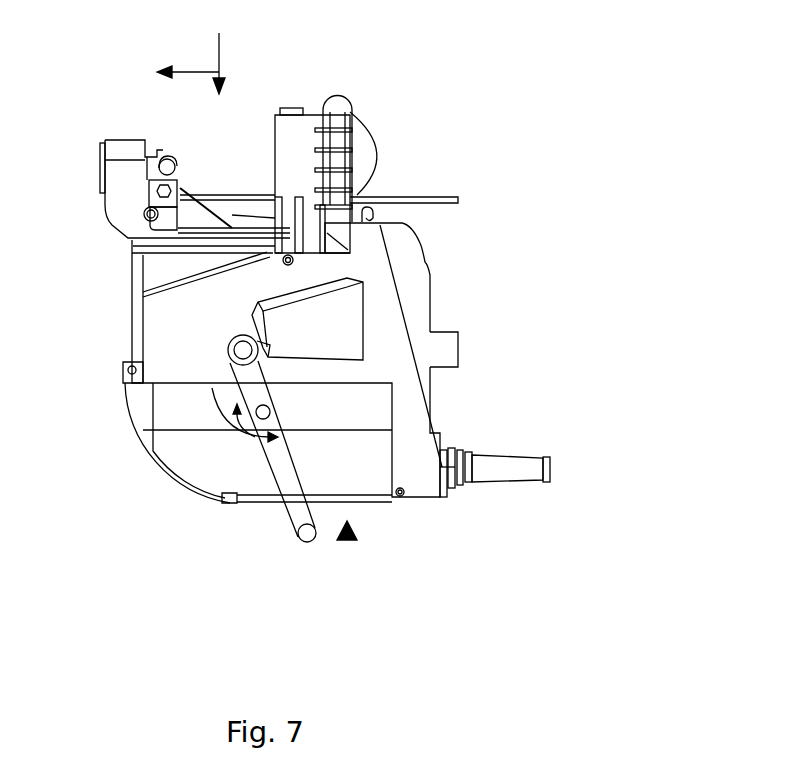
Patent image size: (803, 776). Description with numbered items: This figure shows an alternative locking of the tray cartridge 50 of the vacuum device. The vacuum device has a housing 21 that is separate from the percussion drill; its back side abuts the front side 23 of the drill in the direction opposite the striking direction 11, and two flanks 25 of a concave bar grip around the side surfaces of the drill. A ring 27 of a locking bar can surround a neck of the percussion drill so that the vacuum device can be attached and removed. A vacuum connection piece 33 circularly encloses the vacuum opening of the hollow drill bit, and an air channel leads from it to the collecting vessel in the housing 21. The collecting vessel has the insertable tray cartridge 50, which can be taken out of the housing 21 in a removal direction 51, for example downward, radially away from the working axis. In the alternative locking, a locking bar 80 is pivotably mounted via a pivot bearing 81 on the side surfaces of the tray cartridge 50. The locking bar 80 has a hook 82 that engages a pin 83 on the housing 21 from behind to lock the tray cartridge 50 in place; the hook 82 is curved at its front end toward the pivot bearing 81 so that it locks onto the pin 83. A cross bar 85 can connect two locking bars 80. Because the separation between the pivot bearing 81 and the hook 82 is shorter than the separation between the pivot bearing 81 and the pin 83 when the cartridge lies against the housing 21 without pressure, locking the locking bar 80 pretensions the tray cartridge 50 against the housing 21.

The striking direction 11 is at (205, 75).
The housing 21 is at (412, 292).
The front side 23 is at (437, 425).
The flanks 25 is at (450, 348).
The ring 27 is at (335, 168).
The vacuum connection piece 33 is at (122, 165).
The tray cartridge 50 is at (347, 542).
The removal direction 51 is at (221, 52).
The locking bar 80 is at (164, 497).
The pivot bearing 81 is at (250, 436).
The hook 82 is at (255, 405).
The pin 83 is at (243, 363).
The cross bar 85 is at (298, 537).